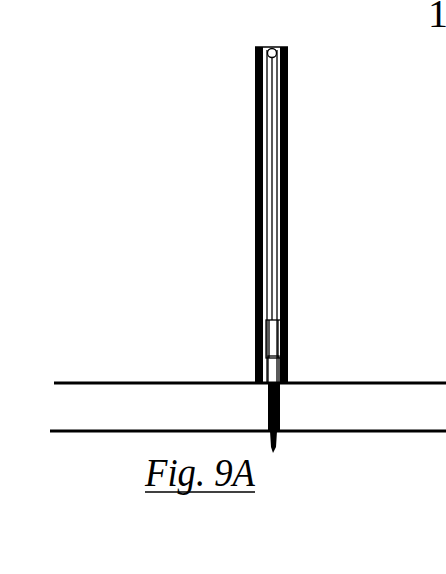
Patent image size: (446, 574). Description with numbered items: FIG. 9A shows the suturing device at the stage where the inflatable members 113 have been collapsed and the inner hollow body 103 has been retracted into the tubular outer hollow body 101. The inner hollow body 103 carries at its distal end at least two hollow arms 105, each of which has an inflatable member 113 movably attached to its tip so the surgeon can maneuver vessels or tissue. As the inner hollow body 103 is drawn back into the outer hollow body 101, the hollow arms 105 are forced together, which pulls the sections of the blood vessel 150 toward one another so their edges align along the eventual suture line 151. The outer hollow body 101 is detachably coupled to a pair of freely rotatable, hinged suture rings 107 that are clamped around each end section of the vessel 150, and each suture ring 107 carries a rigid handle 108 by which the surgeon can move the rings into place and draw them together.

The outer hollow body 101 is at (291, 248).
The inner hollow body 103 is at (274, 152).
The hollow arm 105 is at (288, 343).
The inflatable member 113 is at (287, 368).
The blood vessel 150 is at (118, 379).
The suture line 151 is at (259, 398).
The suture ring 107 is at (286, 408).
The handle 108 is at (286, 453).